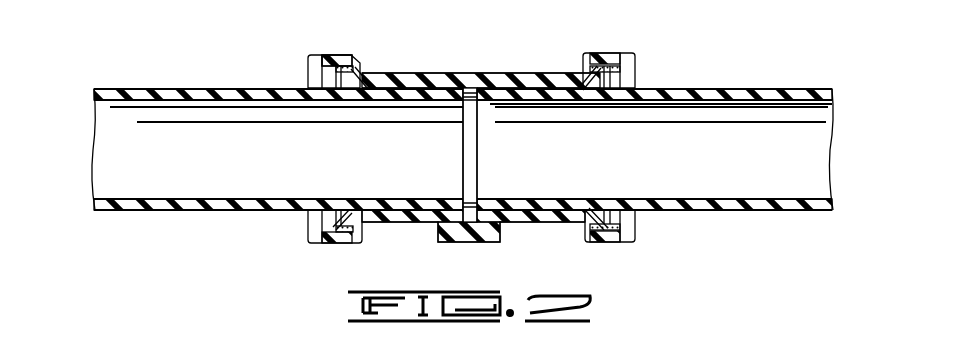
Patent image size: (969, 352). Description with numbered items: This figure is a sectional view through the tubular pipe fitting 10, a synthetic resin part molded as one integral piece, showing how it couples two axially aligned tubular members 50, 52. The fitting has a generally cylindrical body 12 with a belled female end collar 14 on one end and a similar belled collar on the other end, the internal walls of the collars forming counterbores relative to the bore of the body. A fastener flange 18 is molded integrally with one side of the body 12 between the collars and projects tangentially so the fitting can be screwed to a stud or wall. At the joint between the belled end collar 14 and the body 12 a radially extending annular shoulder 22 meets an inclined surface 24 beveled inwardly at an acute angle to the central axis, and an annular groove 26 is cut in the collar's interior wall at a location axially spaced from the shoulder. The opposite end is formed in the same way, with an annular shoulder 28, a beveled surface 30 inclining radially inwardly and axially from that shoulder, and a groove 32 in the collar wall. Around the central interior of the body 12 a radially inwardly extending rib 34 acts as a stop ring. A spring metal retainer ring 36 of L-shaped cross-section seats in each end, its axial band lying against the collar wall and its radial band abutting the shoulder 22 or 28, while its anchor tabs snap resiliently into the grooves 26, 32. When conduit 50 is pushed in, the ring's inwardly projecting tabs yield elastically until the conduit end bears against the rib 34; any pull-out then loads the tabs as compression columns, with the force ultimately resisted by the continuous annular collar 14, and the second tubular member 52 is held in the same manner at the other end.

The tubular pipe fitting 10 is at (537, 73).
The cylindrical body 12 is at (416, 72).
The belled end collar 14 is at (344, 62).
The fastener flange 18 is at (471, 234).
The annular shoulder 22 is at (342, 233).
The inclined surface 24 is at (366, 96).
The annular groove 26 is at (323, 55).
The annular shoulder 28 is at (590, 232).
The beveled surface 30 is at (586, 228).
The groove 32 is at (622, 56).
The rib 34 is at (478, 190).
The spring metal retainer ring 36 is at (601, 95).
The tubular member 50 is at (136, 206).
The tubular member 52 is at (740, 208).